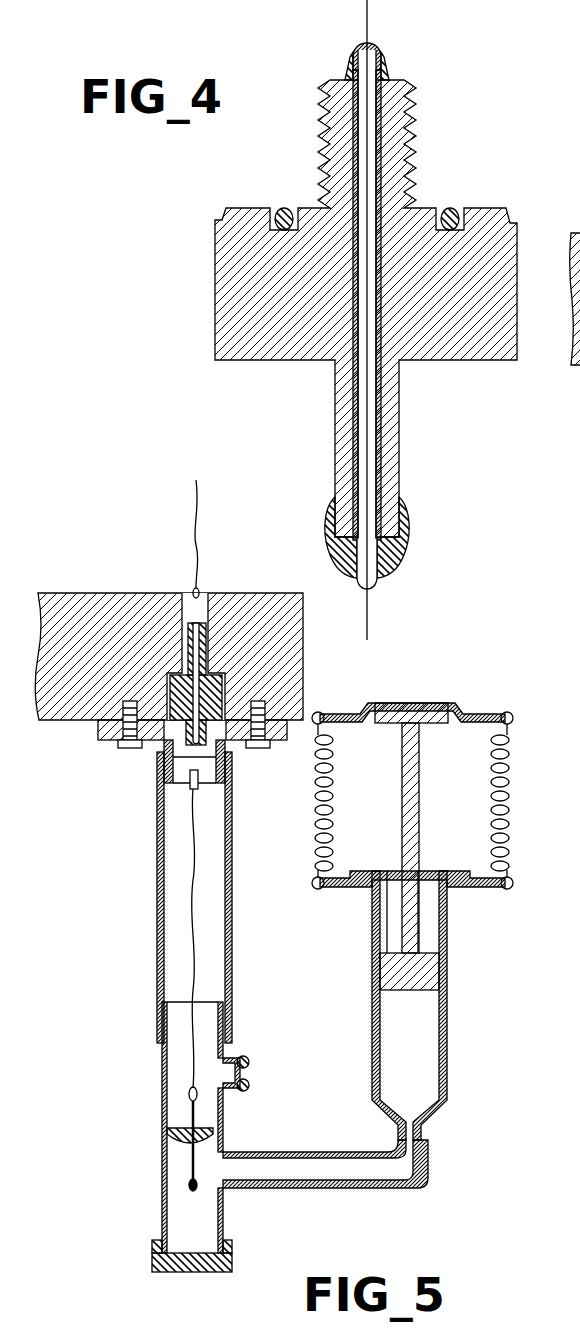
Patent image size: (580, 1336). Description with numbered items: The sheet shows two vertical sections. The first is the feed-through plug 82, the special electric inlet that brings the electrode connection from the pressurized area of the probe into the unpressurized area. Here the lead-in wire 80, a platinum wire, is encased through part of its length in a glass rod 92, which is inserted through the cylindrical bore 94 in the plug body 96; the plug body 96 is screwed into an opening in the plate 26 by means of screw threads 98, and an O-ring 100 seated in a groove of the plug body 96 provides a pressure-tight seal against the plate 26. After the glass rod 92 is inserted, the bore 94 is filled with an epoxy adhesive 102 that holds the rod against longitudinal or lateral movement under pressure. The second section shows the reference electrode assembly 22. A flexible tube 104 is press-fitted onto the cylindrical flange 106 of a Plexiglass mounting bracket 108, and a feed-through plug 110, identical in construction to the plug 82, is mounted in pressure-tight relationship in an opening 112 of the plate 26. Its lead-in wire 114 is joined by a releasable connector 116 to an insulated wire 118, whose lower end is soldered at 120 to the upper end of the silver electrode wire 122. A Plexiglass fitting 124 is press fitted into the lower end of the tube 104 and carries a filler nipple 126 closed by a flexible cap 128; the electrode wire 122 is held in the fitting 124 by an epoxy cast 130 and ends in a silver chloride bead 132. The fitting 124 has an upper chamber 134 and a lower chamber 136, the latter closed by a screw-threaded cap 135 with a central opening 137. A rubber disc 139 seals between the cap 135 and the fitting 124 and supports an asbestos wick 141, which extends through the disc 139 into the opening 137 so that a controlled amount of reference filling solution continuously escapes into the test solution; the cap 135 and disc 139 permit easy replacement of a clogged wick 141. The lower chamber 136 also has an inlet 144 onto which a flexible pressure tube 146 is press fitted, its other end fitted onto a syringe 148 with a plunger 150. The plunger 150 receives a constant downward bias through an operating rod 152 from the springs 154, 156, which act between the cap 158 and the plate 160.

In FIG. 5, the reference electrode assembly 22 is at (147, 1179).
In FIG. 5, the plate 26 is at (258, 602).
In FIG. 4, the lead-in wire 80 is at (367, 611).
In FIG. 4, the feed-through plug 82 is at (213, 278).
In FIG. 4, the glass rod 92 is at (381, 58).
In FIG. 4, the cylindrical bore 94 is at (387, 157).
In FIG. 4, the plug body 96 is at (312, 342).
In FIG. 4, the screw threads 98 is at (326, 146).
In FIG. 4, the O-ring 100 is at (457, 210).
In FIG. 4, the epoxy adhesive 102 is at (388, 70).
In FIG. 5, the flexible tube 104 is at (233, 882).
In FIG. 5, the cylindrical flange 106 is at (232, 770).
In FIG. 5, the mounting bracket 108 is at (277, 741).
In FIG. 5, the feed-through plug 110 is at (220, 689).
In FIG. 5, the opening 112 is at (188, 597).
In FIG. 5, the lead-in wire 114 is at (193, 757).
In FIG. 5, the releasable connector 116 is at (190, 784).
In FIG. 5, the insulated wire 118 is at (191, 904).
In FIG. 5, the solder joint 120 is at (189, 1089).
In FIG. 5, the silver electrode wire 122 is at (200, 1115).
In FIG. 5, the fitting 124 is at (161, 1050).
In FIG. 5, the filler nipple 126 is at (252, 1081).
In FIG. 5, the flexible cap 128 is at (250, 1059).
In FIG. 5, the epoxy cast 130 is at (166, 1127).
In FIG. 5, the silver chloride bead 132 is at (188, 1182).
In FIG. 5, the upper chamber 134 is at (205, 1030).
In FIG. 5, the screw-threaded cap 135 is at (153, 1266).
In FIG. 5, the lower chamber 136 is at (202, 1199).
In FIG. 5, the central opening 137 is at (193, 1272).
In FIG. 5, the rubber disc 139 is at (158, 1248).
In FIG. 5, the asbestos wick 141 is at (194, 1252).
In FIG. 5, the inlet 144 is at (273, 1173).
In FIG. 5, the flexible pressure tube 146 is at (430, 1168).
In FIG. 5, the syringe 148 is at (448, 1030).
In FIG. 5, the plunger 150 is at (420, 976).
In FIG. 5, the operating rod 152 is at (416, 779).
In FIG. 5, the spring 154 is at (336, 822).
In FIG. 5, the spring 156 is at (510, 816).
In FIG. 5, the cap 158 is at (457, 712).
In FIG. 5, the plate 160 is at (509, 881).